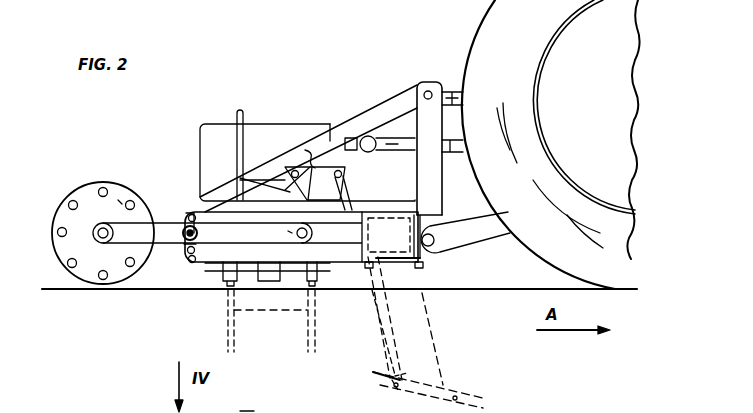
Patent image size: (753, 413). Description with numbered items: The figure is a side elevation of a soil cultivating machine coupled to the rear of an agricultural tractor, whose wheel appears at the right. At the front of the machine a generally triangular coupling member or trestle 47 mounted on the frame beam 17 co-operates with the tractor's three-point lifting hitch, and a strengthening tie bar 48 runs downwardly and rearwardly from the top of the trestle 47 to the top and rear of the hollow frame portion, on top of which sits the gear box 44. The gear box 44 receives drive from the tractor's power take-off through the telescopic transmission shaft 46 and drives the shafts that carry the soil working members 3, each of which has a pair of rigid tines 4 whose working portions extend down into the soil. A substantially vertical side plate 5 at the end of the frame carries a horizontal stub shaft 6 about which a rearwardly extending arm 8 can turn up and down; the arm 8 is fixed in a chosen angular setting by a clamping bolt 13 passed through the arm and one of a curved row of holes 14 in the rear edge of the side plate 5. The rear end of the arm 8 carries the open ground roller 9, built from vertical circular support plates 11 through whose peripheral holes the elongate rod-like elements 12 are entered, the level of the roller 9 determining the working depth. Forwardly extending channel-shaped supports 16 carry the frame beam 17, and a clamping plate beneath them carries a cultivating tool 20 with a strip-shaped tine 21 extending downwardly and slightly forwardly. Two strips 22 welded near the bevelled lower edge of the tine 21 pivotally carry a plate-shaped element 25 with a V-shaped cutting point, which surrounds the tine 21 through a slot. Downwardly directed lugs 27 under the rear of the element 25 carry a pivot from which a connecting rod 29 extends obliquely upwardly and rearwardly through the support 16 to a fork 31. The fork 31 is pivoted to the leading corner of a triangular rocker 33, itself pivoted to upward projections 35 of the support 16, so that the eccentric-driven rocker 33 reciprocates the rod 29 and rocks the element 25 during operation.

The soil working member 3 is at (236, 328).
The tine 4 is at (247, 320).
The side plate 5 is at (322, 290).
The stub shaft 6 is at (288, 232).
The arm 8 is at (155, 228).
The ground roller 9 is at (97, 182).
The support plate 11 is at (120, 202).
The elongate element 12 is at (67, 206).
The clamping bolt 13 is at (190, 212).
The hole 14 is at (183, 255).
The support 16 is at (334, 212).
The frame beam 17 is at (457, 212).
The cultivating tool 20 is at (437, 358).
The strip-shaped tine 21 is at (407, 278).
The strip 22 is at (248, 409).
The plate-shaped element 25 is at (470, 395).
The lug 27 is at (385, 392).
The connecting rod 29 is at (372, 340).
The fork 31 is at (347, 172).
The rocker 33 is at (305, 148).
The upward projection 35 is at (240, 182).
The gear box 44 is at (271, 130).
The telescopic transmission shaft 46 is at (457, 146).
The coupling member or trestle 47 is at (415, 181).
The tie bar 48 is at (358, 120).